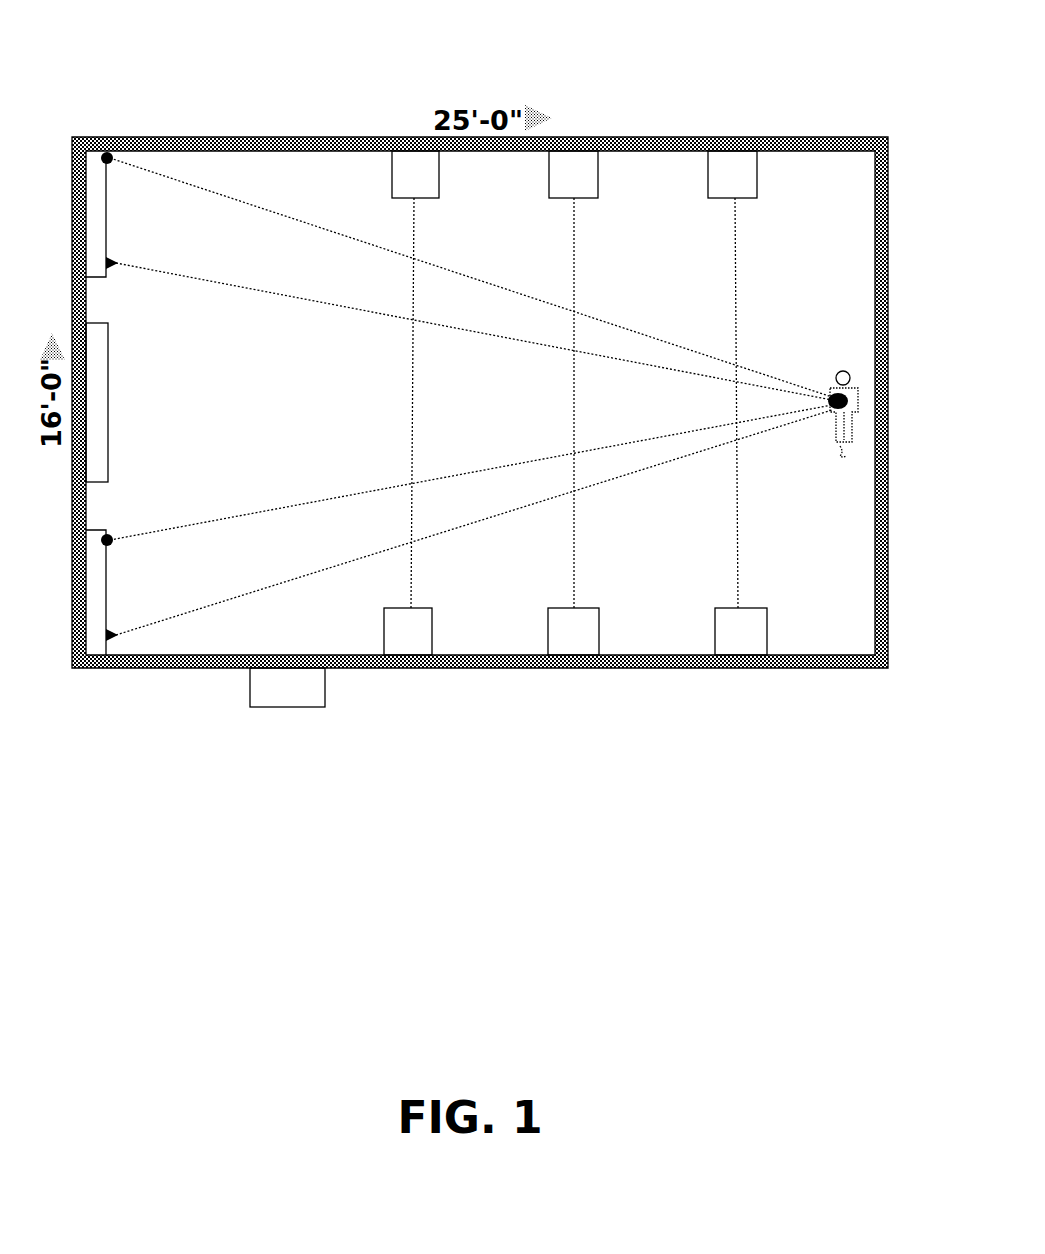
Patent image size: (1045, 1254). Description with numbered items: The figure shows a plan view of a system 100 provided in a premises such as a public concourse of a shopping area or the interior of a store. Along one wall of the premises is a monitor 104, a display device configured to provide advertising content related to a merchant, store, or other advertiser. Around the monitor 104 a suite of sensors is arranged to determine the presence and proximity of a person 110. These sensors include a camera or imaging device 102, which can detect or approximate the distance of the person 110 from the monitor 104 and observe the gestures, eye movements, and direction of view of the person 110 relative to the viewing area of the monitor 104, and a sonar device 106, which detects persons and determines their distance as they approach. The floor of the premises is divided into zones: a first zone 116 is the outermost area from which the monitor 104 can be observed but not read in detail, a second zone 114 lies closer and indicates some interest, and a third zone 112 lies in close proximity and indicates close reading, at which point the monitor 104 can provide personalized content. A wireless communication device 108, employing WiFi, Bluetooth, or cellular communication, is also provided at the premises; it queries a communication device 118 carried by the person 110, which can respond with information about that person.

The system 100 is at (500, 1093).
The camera device 102 is at (103, 184).
The monitor 104 is at (113, 380).
The sonar device 106 is at (103, 578).
The wireless communication device 108 is at (286, 680).
The person 110 is at (827, 422).
The third zone 112 is at (411, 138).
The second zone 114 is at (583, 138).
The first zone 116 is at (737, 138).
The communication device 118 is at (846, 444).